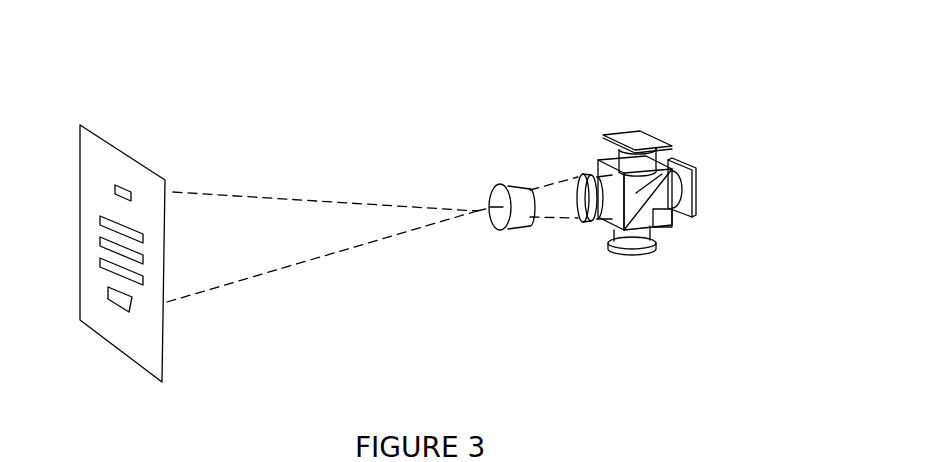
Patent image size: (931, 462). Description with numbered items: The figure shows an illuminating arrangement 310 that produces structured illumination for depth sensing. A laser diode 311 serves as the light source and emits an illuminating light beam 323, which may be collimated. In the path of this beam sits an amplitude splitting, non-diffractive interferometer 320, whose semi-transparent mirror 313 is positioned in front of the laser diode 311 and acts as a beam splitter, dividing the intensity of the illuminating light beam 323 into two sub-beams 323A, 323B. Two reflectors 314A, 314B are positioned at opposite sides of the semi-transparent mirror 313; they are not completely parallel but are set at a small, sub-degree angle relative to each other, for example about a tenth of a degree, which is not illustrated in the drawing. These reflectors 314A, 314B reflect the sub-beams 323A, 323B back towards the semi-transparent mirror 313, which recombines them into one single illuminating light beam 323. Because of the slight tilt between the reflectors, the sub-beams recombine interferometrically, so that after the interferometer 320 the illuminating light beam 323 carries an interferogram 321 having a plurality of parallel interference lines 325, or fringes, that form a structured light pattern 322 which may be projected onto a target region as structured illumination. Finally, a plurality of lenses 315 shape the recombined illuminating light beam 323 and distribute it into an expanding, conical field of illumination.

The illuminating arrangement 310 is at (528, 112).
The laser diode 311 is at (642, 254).
The semi-transparent mirror 313 is at (658, 230).
The reflector 314A is at (695, 190).
The reflector 314B is at (663, 113).
The lenses 315 is at (500, 232).
The interferometer 320 is at (617, 130).
The interferogram 321 is at (203, 217).
The structured light pattern 322 is at (100, 207).
The illuminating light beam 323 is at (585, 178).
The sub-beam 323A is at (678, 210).
The sub-beam 323B is at (579, 177).
The interference lines 325 is at (100, 252).